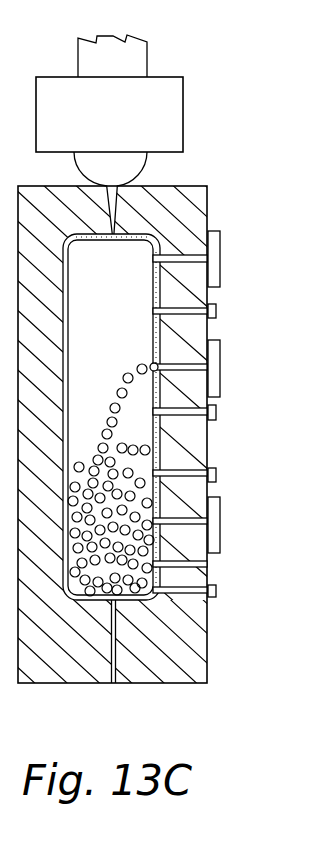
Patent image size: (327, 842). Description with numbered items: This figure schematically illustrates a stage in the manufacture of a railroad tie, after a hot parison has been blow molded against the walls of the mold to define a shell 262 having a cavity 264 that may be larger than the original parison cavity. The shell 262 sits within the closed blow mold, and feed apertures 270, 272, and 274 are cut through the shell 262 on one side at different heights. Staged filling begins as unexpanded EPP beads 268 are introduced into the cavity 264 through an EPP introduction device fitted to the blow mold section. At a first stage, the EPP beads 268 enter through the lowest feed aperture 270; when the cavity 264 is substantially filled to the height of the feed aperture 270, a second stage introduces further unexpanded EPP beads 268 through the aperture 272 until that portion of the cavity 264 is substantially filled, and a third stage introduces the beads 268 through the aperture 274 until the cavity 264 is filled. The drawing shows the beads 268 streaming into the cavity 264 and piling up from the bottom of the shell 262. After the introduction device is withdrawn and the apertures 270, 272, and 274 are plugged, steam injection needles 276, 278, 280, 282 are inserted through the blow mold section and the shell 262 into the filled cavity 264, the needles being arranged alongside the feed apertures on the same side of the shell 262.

The shell 262 is at (160, 241).
The cavity 264 is at (113, 272).
The unexpanded EPP beads 268 is at (132, 558).
The feed aperture 270 is at (158, 527).
The feed aperture 272 is at (220, 369).
The feed aperture 274 is at (208, 258).
The steam injection needle 276 is at (216, 590).
The steam injection needle 278 is at (216, 474).
The steam injection needle 280 is at (216, 412).
The steam injection needle 282 is at (216, 311).